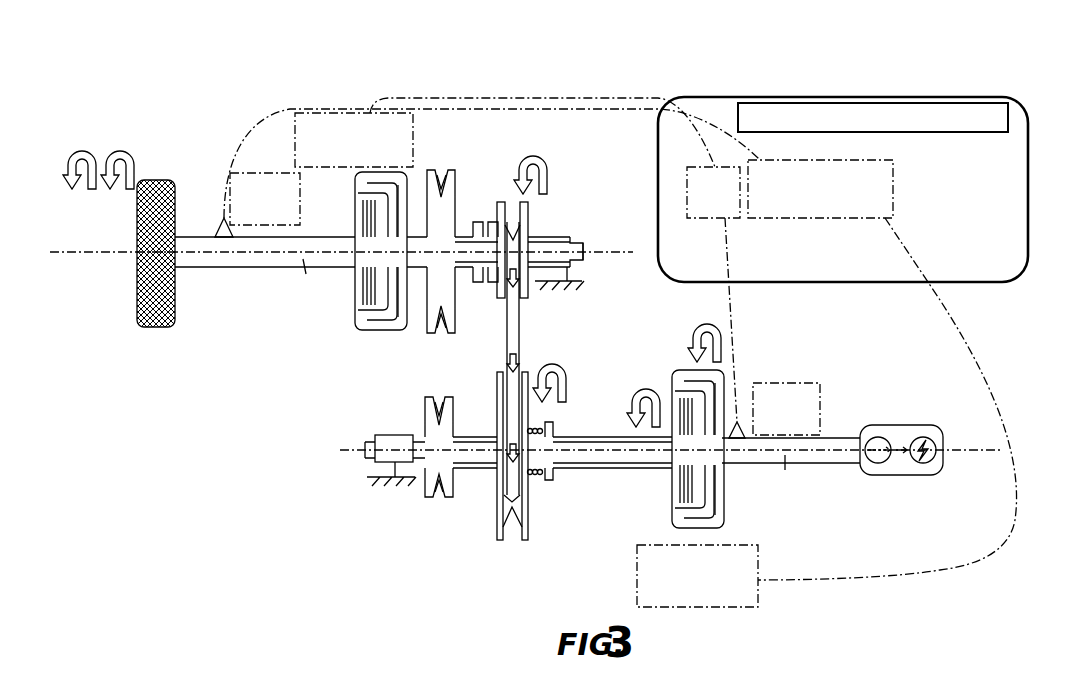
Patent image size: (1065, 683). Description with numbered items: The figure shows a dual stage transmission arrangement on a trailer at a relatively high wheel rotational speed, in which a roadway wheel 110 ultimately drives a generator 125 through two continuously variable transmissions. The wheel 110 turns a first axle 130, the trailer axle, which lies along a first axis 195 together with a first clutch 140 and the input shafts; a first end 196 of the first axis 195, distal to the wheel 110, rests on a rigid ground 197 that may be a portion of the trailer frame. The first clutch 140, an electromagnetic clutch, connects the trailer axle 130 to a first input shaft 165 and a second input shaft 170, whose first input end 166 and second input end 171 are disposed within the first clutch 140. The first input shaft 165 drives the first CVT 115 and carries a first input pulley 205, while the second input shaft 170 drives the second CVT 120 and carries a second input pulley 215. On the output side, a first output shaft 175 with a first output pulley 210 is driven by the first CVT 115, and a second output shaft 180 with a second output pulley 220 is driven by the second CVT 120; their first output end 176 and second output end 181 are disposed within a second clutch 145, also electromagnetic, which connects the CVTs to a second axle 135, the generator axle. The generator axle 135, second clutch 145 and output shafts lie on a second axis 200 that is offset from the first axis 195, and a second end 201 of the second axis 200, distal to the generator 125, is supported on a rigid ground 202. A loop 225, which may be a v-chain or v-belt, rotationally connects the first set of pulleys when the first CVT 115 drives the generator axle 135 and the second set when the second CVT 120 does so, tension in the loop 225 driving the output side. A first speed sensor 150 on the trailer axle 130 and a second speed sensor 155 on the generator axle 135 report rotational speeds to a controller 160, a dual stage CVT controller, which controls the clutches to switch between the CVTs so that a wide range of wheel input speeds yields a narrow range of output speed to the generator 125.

The wheel 110 is at (157, 181).
The first CVT 115 is at (465, 160).
The second CVT 120 is at (548, 163).
The generator 125 is at (880, 424).
The first axle 130 is at (218, 268).
The second axle 135 is at (845, 473).
The first clutch 140 is at (347, 273).
The second clutch 145 is at (695, 459).
The first speed sensor 150 is at (242, 133).
The second speed sensor 155 is at (783, 383).
The controller 160 is at (942, 97).
The first input shaft 165 is at (418, 240).
The first input end 166 is at (381, 333).
The second input shaft 170 is at (561, 165).
The second input end 171 is at (372, 275).
The first output shaft 175 is at (472, 455).
The first output end 176 is at (700, 473).
The second output shaft 180 is at (393, 435).
The second output end 181 is at (692, 522).
The first axis 195 is at (118, 256).
The first end 196 is at (585, 257).
The rigid ground 197 is at (575, 291).
The second axis 200 is at (995, 473).
The second end 201 is at (363, 447).
The rigid ground 202 is at (380, 486).
The first input pulley 205 is at (442, 187).
The first output pulley 210 is at (428, 494).
The second input pulley 215 is at (500, 203).
The second output pulley 220 is at (500, 538).
The loop 225 is at (505, 344).